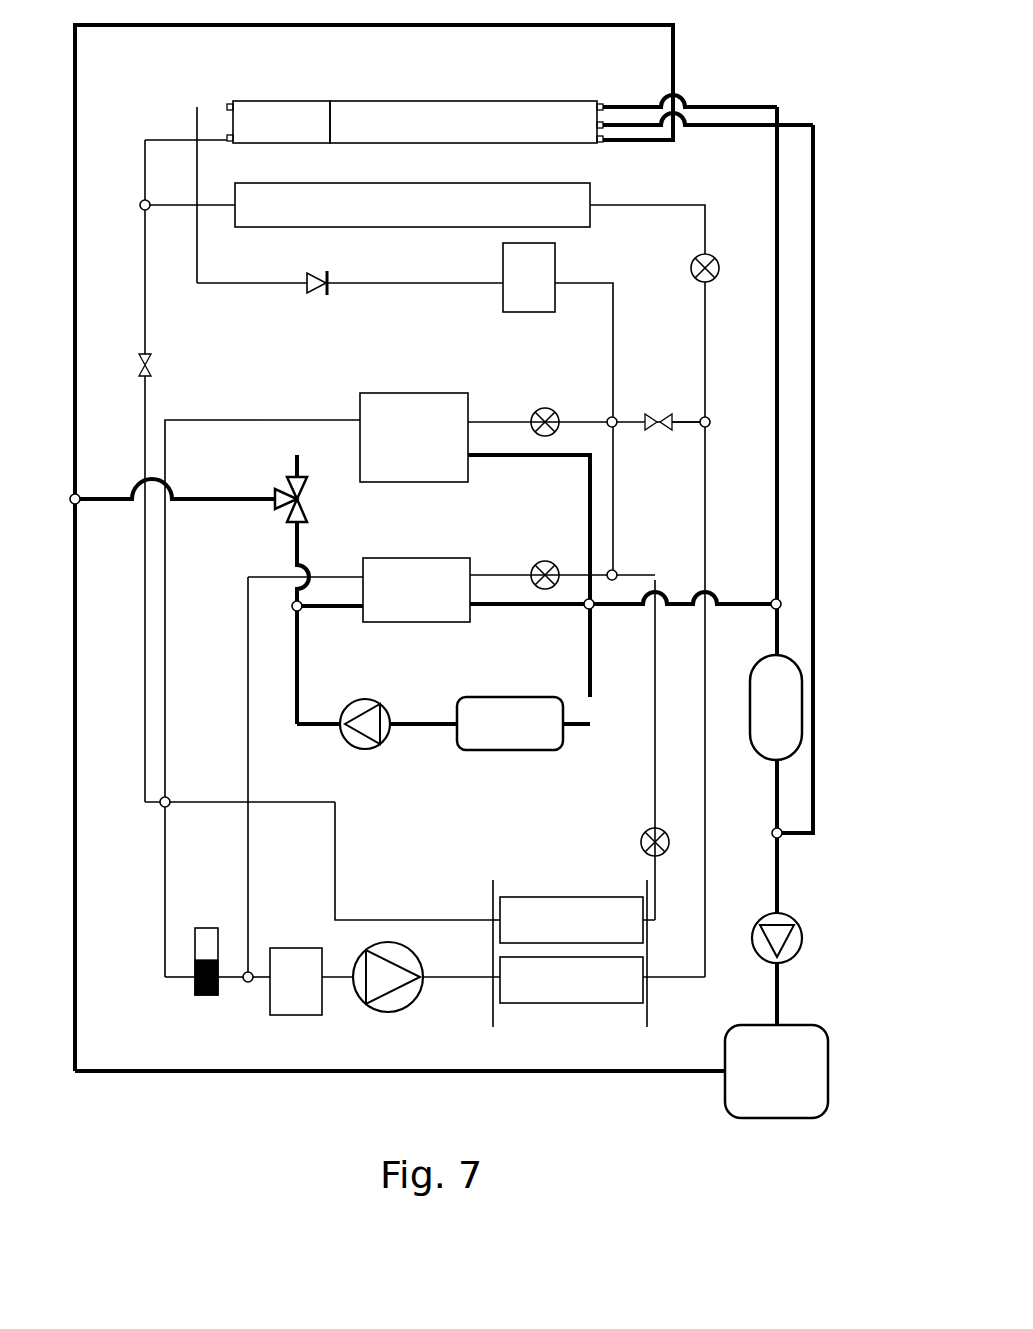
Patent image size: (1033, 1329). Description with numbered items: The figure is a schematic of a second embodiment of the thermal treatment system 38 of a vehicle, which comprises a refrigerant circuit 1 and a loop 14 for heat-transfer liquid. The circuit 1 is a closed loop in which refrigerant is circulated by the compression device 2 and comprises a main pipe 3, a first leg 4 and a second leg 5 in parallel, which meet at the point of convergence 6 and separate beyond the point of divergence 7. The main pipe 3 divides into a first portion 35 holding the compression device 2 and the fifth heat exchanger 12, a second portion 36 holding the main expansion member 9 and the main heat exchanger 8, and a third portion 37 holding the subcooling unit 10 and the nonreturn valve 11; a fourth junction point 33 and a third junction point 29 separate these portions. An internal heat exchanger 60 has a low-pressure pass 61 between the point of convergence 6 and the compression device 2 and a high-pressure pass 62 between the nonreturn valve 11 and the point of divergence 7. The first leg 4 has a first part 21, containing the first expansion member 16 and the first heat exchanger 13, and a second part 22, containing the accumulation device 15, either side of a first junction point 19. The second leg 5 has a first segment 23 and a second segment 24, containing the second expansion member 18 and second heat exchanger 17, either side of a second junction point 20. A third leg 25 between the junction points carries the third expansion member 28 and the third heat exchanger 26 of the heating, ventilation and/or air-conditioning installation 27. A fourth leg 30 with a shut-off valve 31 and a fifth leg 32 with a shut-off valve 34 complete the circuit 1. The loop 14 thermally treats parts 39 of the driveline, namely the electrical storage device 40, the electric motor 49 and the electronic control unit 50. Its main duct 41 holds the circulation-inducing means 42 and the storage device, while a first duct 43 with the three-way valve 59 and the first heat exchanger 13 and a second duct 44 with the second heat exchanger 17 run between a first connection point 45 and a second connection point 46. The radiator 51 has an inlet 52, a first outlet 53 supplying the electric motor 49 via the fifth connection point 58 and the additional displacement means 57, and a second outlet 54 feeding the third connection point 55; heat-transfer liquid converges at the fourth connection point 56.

The circuit 1 is at (137, 658).
The compression device 2 is at (513, 977).
The main pipe 3 is at (445, 230).
The first leg 4 is at (212, 421).
The second leg 5 is at (246, 700).
The point of convergence 6 is at (246, 983).
The point of divergence 7 is at (610, 417).
The main heat exchanger 8 is at (412, 205).
The main expansion member 9 is at (715, 258).
The subcooling unit 10 is at (278, 122).
The nonreturn valve 11 is at (307, 283).
The fifth heat exchanger 12 is at (571, 980).
The first heat exchanger 13 is at (414, 437).
The loop for heat-transfer liquid 14 is at (733, 107).
The accumulation device 15 is at (195, 992).
The first expansion member 16 is at (536, 410).
The second heat exchanger 17 is at (416, 590).
The second expansion member 18 is at (536, 565).
The first junction point 19 is at (160, 805).
The second junction point 20 is at (617, 572).
The first part 21 is at (325, 420).
The second part 22 is at (162, 905).
The first segment 23 is at (615, 570).
The second segment 24 is at (245, 578).
The third leg 25 is at (337, 890).
The third heat exchanger 26 is at (571, 920).
The heating, ventilation and/or air-conditioning installation 27 is at (650, 1003).
The third expansion member 28 is at (643, 842).
The third junction point 29 is at (140, 203).
The fourth leg 30 is at (140, 300).
The shut-off valve 31 is at (140, 368).
The fifth leg 32 is at (683, 418).
The fourth junction point 33 is at (710, 418).
The shut-off valve 34 is at (648, 418).
The first portion 35 is at (705, 778).
The second portion 36 is at (683, 205).
The third portion 37 is at (145, 140).
The thermal treatment system 38 is at (208, 1086).
The part of electric traction driveline 39 is at (510, 723).
The electrical storage device 40 is at (510, 723).
The main duct 41 is at (430, 724).
The circulation-inducing means 42 is at (372, 700).
The first duct 43 is at (340, 455).
The second duct 44 is at (532, 608).
The first connection point 45 is at (295, 610).
The second connection point 46 is at (592, 609).
The electric motor 49 is at (776, 1071).
The electronic control unit 50 is at (776, 707).
The radiator 51 is at (463, 122).
The inlet 52 is at (600, 143).
The first outlet 53 is at (597, 124).
The second outlet 54 is at (600, 105).
The third connection point 55 is at (772, 599).
The fourth connection point 56 is at (78, 497).
The additional displacement means 57 is at (765, 916).
The fifth connection point 58 is at (774, 830).
The three-way valve 59 is at (280, 497).
The internal heat exchanger 60 is at (529, 277).
The low-pressure pass 61 is at (296, 981).
The high-pressure pass 62 is at (529, 277).